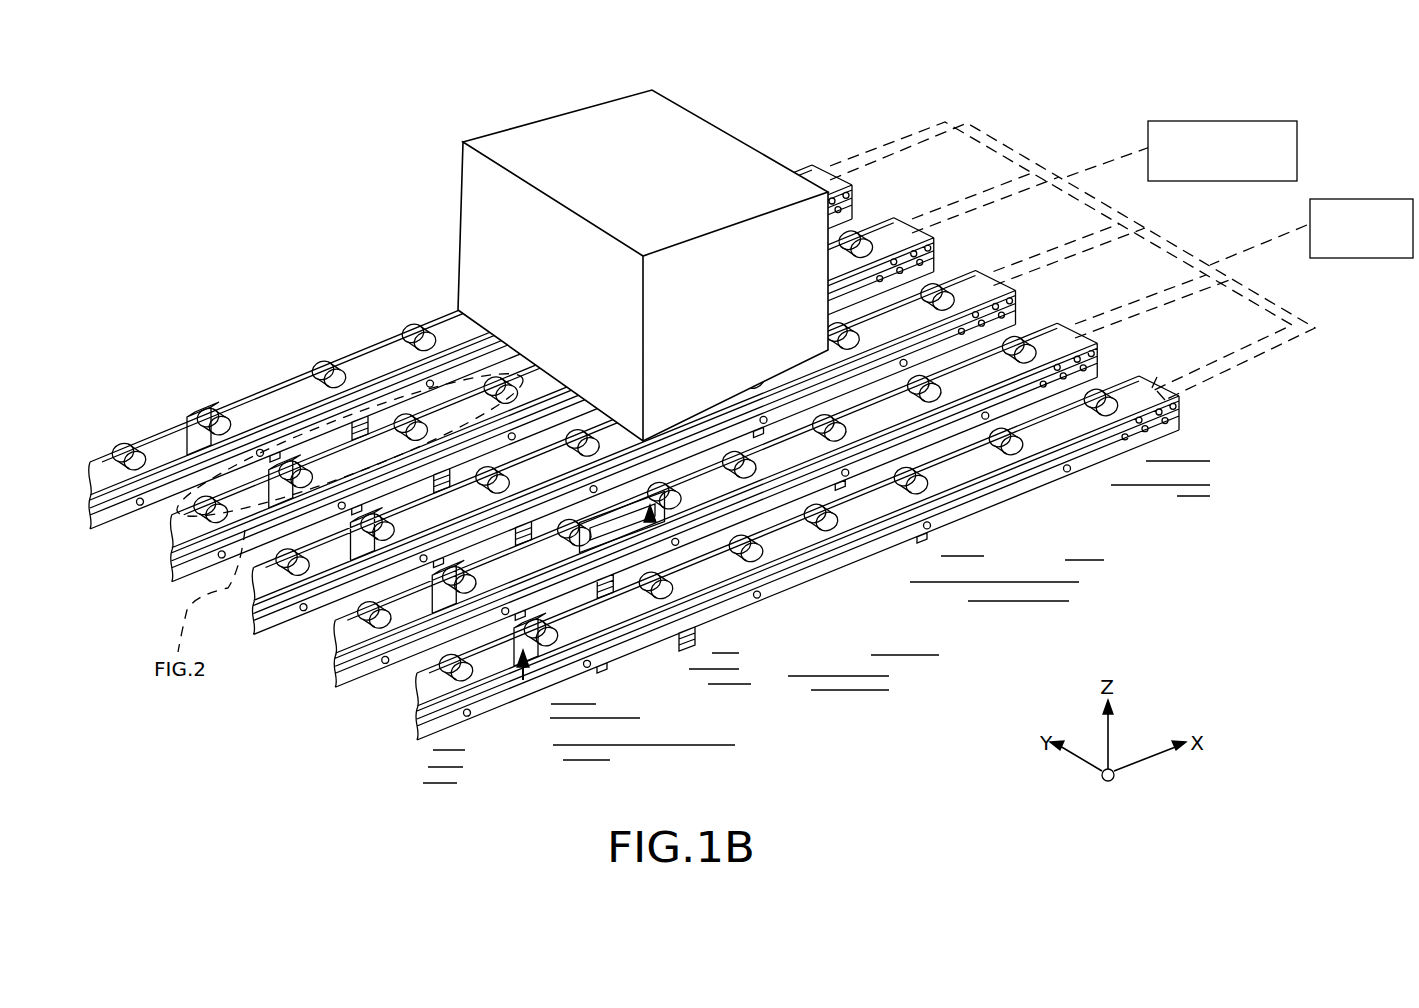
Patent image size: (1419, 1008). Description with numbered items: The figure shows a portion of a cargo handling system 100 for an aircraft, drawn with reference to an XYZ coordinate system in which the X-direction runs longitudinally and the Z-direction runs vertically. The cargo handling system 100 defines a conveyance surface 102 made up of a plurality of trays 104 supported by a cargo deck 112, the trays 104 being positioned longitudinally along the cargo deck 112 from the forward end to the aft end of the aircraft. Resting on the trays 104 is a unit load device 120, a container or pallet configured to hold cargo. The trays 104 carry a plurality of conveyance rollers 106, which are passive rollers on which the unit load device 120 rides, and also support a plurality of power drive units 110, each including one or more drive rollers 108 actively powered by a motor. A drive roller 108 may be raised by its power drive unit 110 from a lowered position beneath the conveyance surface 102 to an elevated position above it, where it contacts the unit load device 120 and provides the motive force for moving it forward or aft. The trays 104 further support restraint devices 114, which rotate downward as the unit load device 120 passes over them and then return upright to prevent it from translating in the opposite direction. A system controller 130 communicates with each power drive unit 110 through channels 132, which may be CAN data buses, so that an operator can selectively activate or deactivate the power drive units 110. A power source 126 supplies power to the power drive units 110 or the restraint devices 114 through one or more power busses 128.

The cargo handling system 100 is at (247, 130).
The conveyance surface 102 is at (126, 408).
The trays 104 is at (937, 262).
The conveyance rollers 106 is at (318, 383).
The drive rollers 108 is at (693, 508).
The power drive units 110 is at (650, 522).
The cargo deck 112 is at (999, 563).
The restraint devices 114 is at (522, 680).
The unit load device 120 is at (677, 128).
The power source 126 is at (1368, 198).
The power busses 128 is at (1200, 383).
The system controller 130 is at (1175, 120).
The channels 132 is at (910, 133).